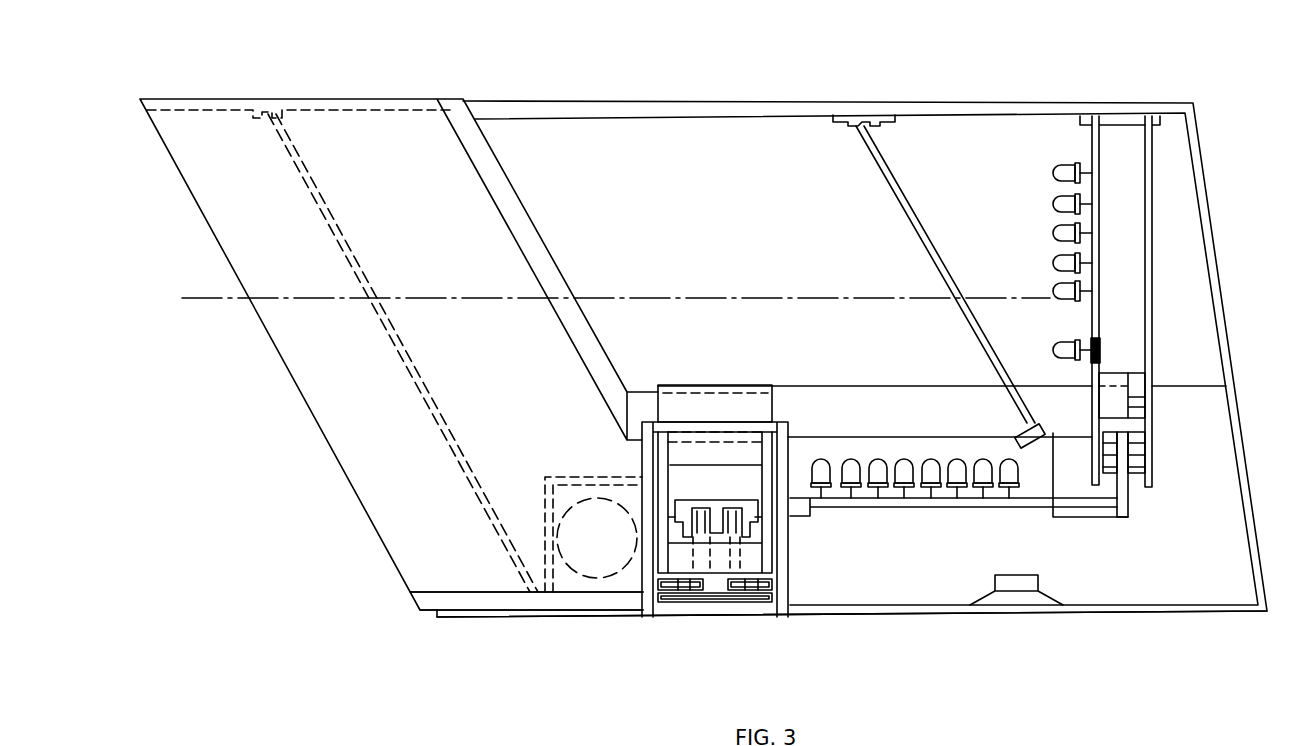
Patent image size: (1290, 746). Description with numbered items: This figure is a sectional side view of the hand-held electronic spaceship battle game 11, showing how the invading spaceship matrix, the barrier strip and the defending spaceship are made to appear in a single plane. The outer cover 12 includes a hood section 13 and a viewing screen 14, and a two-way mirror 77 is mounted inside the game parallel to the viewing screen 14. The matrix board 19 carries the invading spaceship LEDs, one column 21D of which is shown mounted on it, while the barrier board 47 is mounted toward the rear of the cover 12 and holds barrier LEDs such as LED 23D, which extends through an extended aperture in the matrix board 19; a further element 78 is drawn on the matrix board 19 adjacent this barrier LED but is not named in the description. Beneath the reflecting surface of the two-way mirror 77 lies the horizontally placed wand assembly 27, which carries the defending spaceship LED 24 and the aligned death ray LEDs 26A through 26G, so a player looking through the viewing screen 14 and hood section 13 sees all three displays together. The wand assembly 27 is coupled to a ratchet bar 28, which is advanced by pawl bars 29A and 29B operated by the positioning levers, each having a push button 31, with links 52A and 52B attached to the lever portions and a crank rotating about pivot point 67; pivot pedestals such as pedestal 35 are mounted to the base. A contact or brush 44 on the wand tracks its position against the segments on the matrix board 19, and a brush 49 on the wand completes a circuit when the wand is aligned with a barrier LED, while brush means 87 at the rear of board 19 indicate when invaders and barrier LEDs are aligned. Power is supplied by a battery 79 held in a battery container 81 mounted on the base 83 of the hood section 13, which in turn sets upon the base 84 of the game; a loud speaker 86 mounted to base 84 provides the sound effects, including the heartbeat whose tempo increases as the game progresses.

The hand-held electronic spaceship battle game 11 is at (1197, 83).
The outer cover 12 is at (1212, 246).
The hood section 13 is at (352, 98).
The viewing screen 14 is at (340, 229).
The matrix board 19 is at (1090, 143).
The column of LEDs 21D is at (1053, 173).
The barrier LED 23D is at (1053, 350).
The spaceship LED 24 is at (823, 460).
The death ray LED 26A is at (853, 460).
The death ray LED 26G is at (1018, 467).
The wand assembly 27 is at (806, 515).
The ratchet bar 28 is at (685, 505).
The pawl bar 29A is at (732, 567).
The pawl bar 29B is at (702, 545).
The push button 31 is at (705, 385).
The pivot pedestal 35 is at (790, 562).
The contact or brush 44 is at (1112, 478).
The barrier board 47 is at (1150, 167).
The contact or brush 49 is at (1138, 473).
The link 52A is at (773, 585).
The link 52B is at (668, 590).
The pivot point 67 is at (720, 597).
The two-way mirror 77 is at (887, 160).
The solder connection 78 is at (1102, 343).
The battery 79 is at (597, 558).
The battery container 81 is at (572, 477).
The base of hood section 83 is at (430, 598).
The base 84 is at (927, 610).
The loud speaker 86 is at (1012, 585).
The contact or brush means 87 is at (1113, 395).